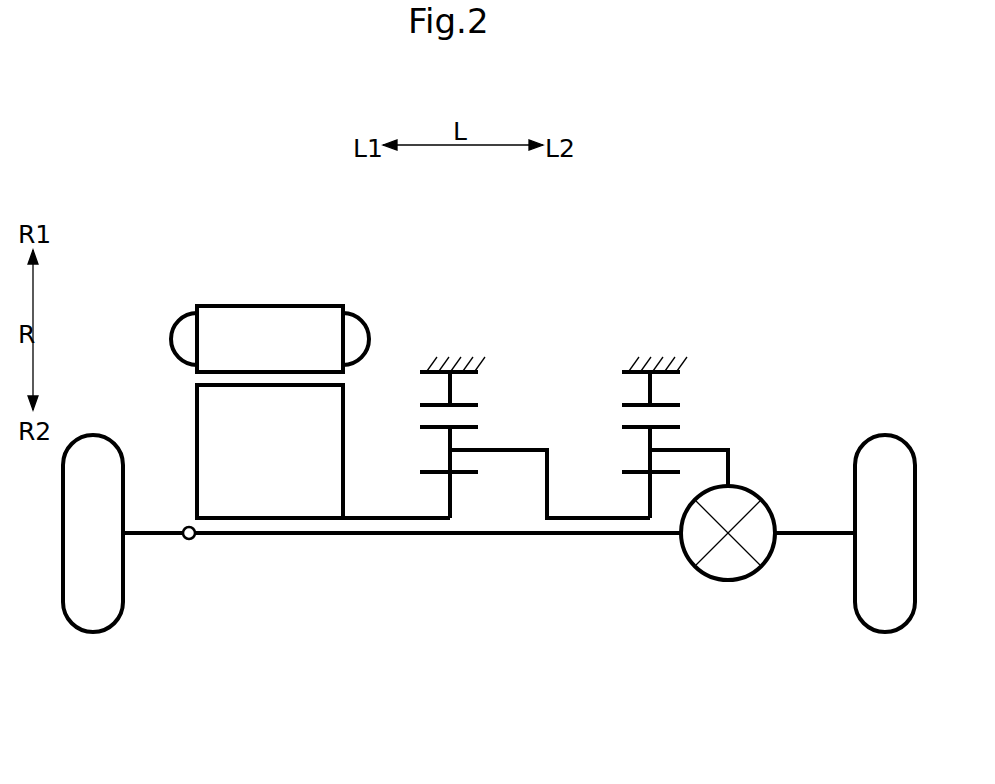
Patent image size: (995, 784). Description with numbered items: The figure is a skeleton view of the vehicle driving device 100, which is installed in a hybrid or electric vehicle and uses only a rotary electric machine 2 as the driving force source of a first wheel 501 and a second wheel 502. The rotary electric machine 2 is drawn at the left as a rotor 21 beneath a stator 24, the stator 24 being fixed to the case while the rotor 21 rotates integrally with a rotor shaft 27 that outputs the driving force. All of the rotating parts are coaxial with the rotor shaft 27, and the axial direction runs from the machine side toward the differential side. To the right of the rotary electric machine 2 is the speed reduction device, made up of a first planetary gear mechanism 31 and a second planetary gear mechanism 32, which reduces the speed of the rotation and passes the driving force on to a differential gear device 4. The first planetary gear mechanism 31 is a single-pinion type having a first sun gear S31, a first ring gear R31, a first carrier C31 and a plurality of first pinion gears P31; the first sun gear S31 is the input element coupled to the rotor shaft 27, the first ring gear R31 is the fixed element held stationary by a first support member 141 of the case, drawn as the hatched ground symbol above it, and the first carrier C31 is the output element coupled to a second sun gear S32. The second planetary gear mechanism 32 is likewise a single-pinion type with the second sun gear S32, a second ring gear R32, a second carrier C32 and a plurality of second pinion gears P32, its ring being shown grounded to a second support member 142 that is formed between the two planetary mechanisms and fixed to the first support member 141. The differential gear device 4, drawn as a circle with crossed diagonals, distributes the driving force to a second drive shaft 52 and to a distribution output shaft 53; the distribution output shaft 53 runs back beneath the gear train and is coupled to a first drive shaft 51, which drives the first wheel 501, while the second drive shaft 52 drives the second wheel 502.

The vehicle driving device 100 is at (795, 258).
The rotary electric machine 2 is at (150, 312).
The stator 24 is at (270, 315).
The rotor 21 is at (197, 442).
The rotor shaft 27 is at (372, 518).
The first planetary gear mechanism 31 is at (508, 365).
The first support member 141 is at (463, 357).
The first ring gear R31 is at (425, 405).
The first pinion gears P31 is at (425, 427).
The first sun gear S31 is at (465, 472).
The first carrier C31 is at (510, 450).
The second planetary gear mechanism 32 is at (700, 378).
The second support member 142 is at (672, 357).
The second ring gear R32 is at (625, 405).
The second pinion gears P32 is at (668, 427).
The second sun gear S32 is at (665, 472).
The second carrier C32 is at (720, 450).
The differential gear device 4 is at (733, 570).
The first drive shaft 51 is at (153, 535).
The second drive shaft 52 is at (810, 535).
The distribution output shaft 53 is at (383, 535).
The first wheel 501 is at (92, 632).
The second wheel 502 is at (886, 630).